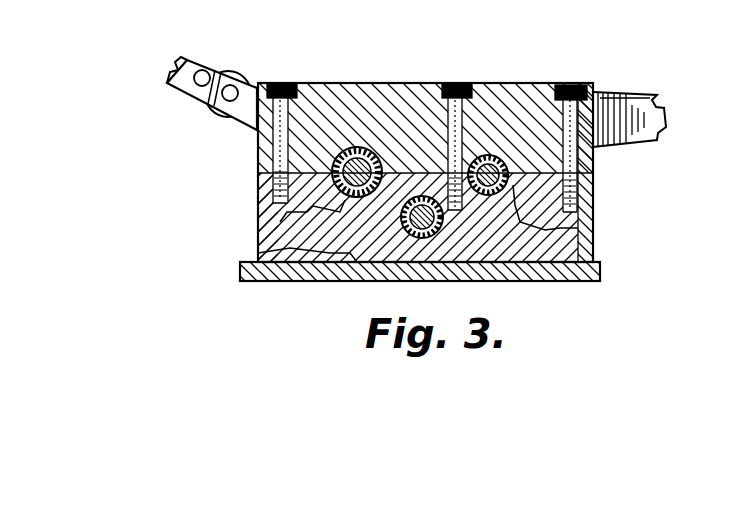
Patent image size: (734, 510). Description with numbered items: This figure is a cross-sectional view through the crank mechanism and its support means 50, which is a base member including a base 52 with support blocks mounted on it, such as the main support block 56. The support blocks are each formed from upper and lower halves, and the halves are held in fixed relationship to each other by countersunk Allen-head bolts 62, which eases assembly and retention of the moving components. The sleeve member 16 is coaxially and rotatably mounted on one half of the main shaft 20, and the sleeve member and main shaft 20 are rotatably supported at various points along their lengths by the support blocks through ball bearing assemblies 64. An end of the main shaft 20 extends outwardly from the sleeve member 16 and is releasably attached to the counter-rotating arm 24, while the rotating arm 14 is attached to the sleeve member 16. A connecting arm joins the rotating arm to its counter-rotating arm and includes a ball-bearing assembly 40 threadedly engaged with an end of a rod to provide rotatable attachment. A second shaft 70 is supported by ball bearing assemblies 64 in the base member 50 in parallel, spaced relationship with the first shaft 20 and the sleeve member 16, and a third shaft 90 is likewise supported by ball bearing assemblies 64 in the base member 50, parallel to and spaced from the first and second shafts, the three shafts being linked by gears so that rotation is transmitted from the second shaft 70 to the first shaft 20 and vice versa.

The rotating arm 14 is at (656, 101).
The sleeve member 16 is at (430, 169).
The main shaft 20 is at (367, 131).
The counter-rotating arm 24 is at (198, 56).
The ball-bearing assembly 40 is at (238, 71).
The support means 50 is at (414, 268).
The base 52 is at (600, 276).
The main support block 56 is at (596, 178).
The countersunk Allen-head bolt 62 is at (280, 84).
The ball bearing assembly 64 is at (490, 155).
The second shaft 70 is at (578, 229).
The third shaft 90 is at (357, 281).